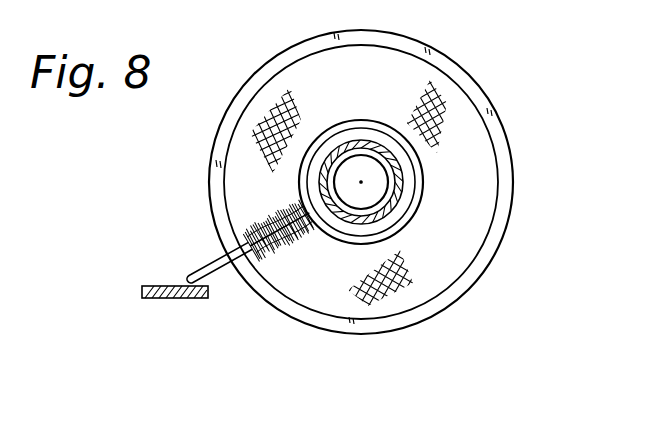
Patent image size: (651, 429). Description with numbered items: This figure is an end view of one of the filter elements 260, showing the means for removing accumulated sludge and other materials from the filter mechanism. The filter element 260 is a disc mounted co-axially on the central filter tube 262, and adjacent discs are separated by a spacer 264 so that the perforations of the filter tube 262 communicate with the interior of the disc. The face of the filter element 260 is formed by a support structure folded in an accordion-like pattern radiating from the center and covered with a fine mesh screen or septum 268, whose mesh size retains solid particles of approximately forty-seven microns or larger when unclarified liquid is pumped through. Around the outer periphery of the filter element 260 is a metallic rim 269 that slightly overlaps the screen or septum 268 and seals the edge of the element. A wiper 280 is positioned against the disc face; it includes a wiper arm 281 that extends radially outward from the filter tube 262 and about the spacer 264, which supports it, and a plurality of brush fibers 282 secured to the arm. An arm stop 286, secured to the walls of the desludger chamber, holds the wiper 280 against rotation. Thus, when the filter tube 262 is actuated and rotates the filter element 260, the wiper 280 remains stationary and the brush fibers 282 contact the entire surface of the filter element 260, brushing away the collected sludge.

The filter element 260 is at (283, 39).
The filter tube 262 is at (398, 163).
The spacer 264 is at (388, 230).
The fine mesh screen or septum 268 is at (351, 65).
The metallic rim 269 is at (448, 53).
The wiper 280 is at (228, 276).
The wiper arm 281 is at (212, 262).
The brush fibers 282 is at (280, 260).
The arm stop 286 is at (165, 312).